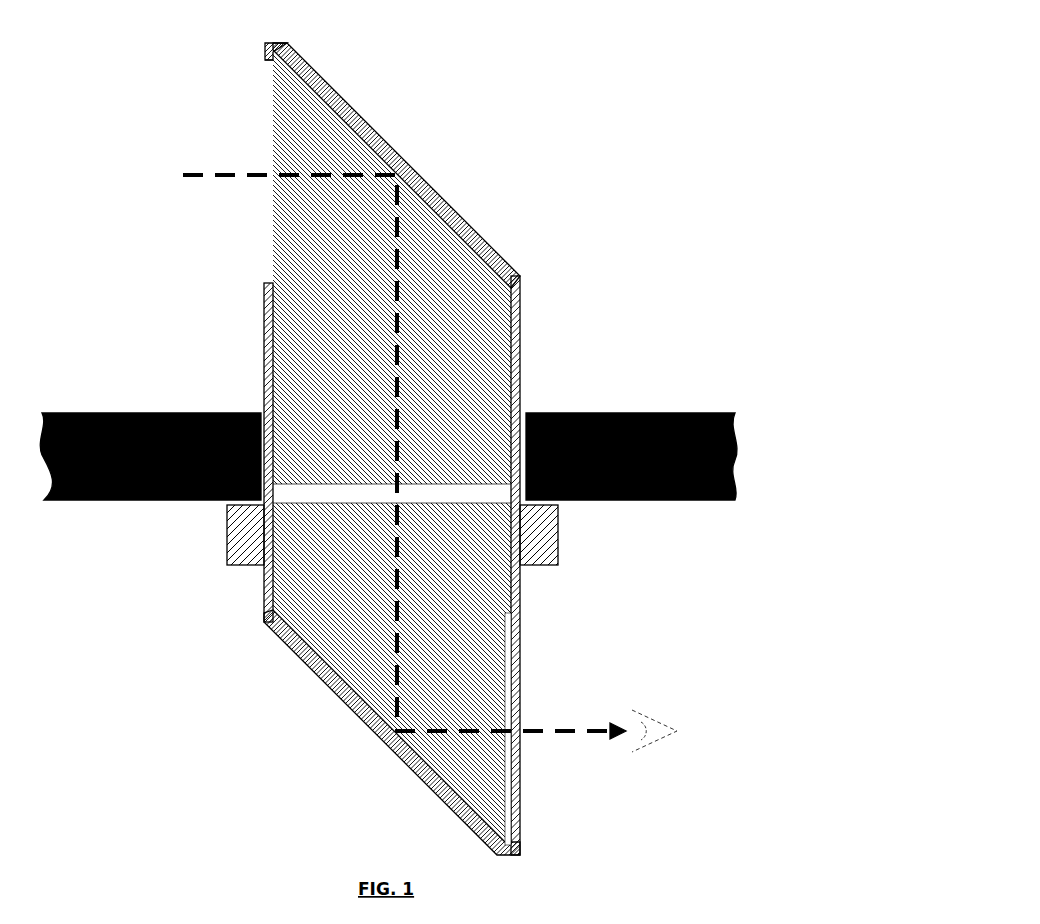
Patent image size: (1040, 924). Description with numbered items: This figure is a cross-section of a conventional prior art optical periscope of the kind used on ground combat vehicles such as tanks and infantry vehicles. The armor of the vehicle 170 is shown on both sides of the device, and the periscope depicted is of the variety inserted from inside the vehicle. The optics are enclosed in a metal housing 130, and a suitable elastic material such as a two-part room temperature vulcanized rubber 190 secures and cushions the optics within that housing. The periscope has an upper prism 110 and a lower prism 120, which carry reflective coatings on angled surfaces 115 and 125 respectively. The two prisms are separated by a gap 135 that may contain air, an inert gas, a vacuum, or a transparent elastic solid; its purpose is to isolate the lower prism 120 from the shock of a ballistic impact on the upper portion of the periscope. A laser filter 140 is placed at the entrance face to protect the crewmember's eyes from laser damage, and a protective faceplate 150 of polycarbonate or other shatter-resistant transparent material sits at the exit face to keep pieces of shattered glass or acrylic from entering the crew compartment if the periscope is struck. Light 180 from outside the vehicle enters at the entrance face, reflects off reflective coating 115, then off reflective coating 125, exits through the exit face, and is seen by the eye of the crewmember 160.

The upper prism 110 is at (520, 449).
The reflective coating on angled surface of upper prism 115 is at (463, 232).
The lower prism 120 is at (520, 449).
The reflective coating on angled surface of lower prism 125 is at (448, 795).
The metal housing 130 is at (265, 45).
The gap 135 is at (265, 568).
The laser filter 140 is at (265, 282).
The protective faceplate 150 is at (515, 792).
The eye of the crewmember 160 is at (645, 712).
The armor of the vehicle 170 is at (612, 413).
The light 180 is at (230, 174).
The RTV rubber 190 is at (268, 57).